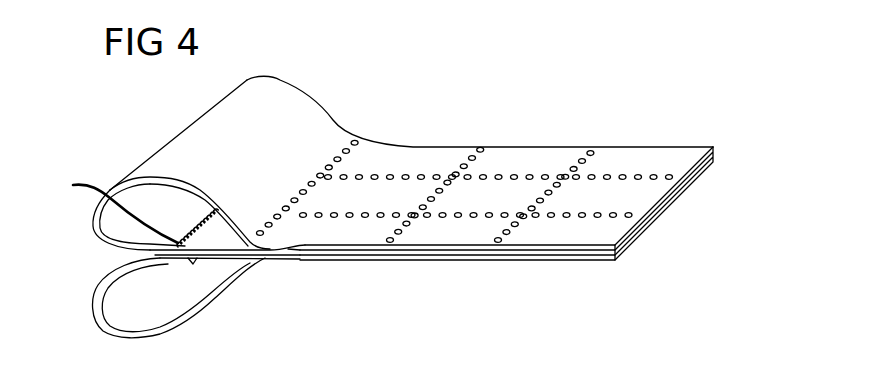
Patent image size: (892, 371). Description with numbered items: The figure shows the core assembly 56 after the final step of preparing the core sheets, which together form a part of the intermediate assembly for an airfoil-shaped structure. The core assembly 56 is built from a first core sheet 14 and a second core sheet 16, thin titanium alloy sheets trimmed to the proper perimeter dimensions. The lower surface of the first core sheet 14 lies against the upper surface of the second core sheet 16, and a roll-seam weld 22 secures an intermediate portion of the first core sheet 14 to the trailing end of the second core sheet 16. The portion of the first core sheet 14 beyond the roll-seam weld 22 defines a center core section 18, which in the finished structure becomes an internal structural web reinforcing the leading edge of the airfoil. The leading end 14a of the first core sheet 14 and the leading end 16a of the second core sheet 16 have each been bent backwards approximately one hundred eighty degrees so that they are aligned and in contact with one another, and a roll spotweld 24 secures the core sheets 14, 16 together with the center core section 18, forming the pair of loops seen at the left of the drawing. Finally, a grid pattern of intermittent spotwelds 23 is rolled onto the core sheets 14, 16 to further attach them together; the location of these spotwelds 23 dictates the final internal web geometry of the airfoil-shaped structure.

The first core sheet 14 is at (551, 104).
The leading end of first core sheet 14a is at (688, 163).
The second core sheet 16 is at (458, 286).
The leading end of second core sheet 16a is at (678, 200).
The center core section 18 is at (230, 253).
The roll-seam weld 22 is at (130, 210).
The intermittent spotwelds 23 is at (596, 155).
The roll spotweld 24 is at (330, 157).
The core assembly 56 is at (118, 122).